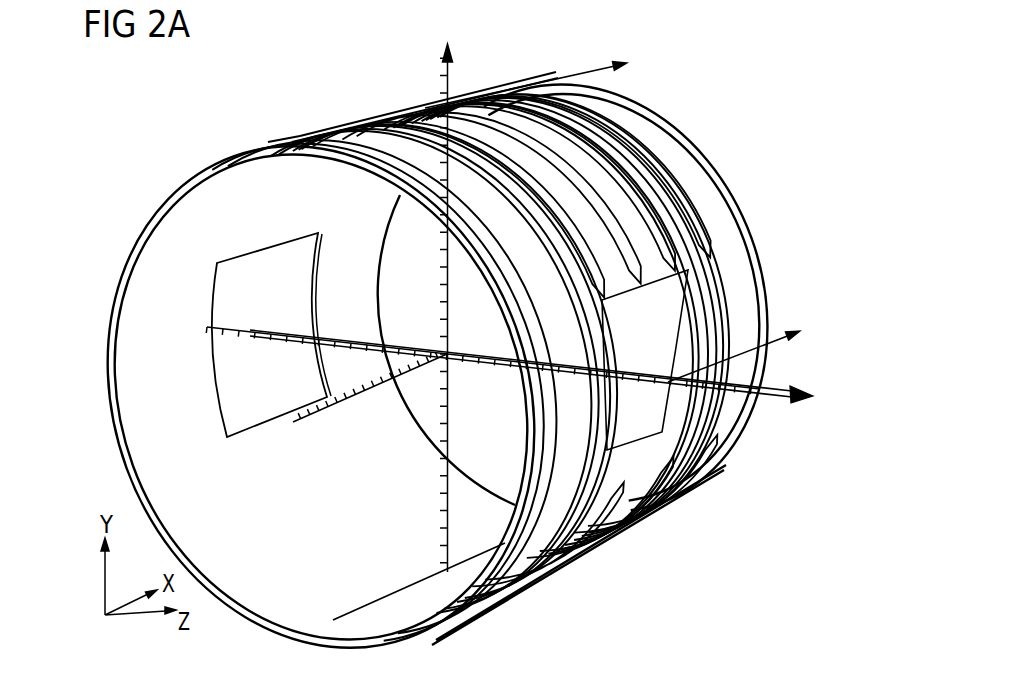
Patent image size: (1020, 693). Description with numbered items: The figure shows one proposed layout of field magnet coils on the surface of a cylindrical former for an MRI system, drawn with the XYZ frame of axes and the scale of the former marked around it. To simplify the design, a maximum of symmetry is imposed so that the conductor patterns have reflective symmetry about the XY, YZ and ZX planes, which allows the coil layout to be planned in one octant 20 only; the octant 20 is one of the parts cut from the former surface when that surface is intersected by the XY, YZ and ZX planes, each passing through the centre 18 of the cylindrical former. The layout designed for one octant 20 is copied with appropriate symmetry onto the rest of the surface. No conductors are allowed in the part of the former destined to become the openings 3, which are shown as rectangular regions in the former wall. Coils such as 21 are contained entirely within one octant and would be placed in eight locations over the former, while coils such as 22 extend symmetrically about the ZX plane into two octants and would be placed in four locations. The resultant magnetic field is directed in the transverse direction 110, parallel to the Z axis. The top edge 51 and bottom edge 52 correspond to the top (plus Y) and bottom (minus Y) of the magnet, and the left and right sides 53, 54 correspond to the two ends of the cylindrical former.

The opening 3 is at (695, 428).
The centre of the cylindrical former 18 is at (447, 354).
The octant 20 is at (787, 340).
The coil contained within one octant 21 is at (598, 268).
The coil extending into two octants 22 is at (708, 167).
The top edge 51 is at (346, 150).
The bottom edge 52 is at (375, 600).
The left side 53 is at (267, 136).
The right side 54 is at (546, 66).
The transverse direction 110 is at (796, 405).